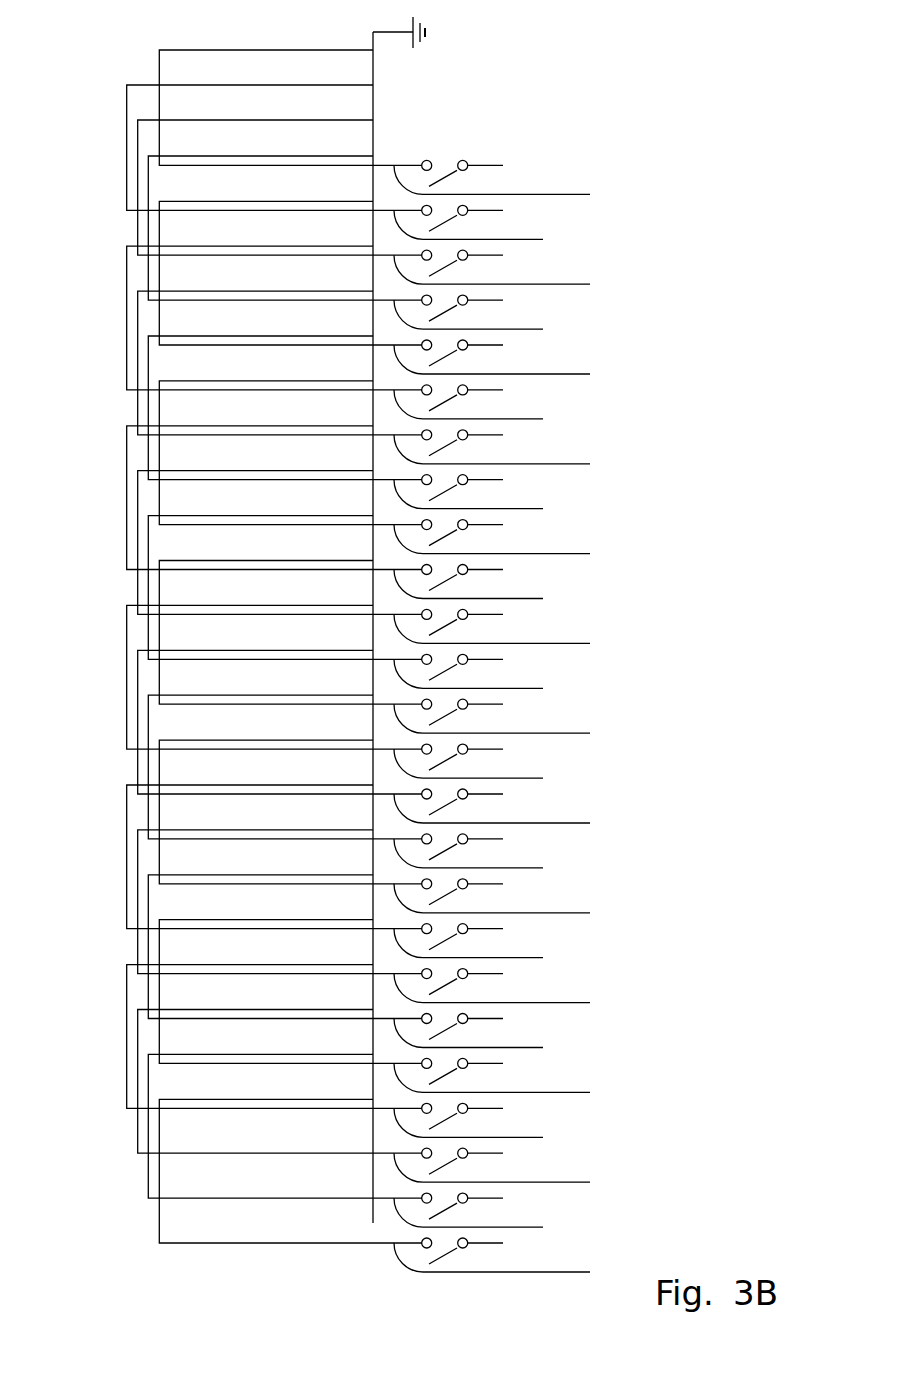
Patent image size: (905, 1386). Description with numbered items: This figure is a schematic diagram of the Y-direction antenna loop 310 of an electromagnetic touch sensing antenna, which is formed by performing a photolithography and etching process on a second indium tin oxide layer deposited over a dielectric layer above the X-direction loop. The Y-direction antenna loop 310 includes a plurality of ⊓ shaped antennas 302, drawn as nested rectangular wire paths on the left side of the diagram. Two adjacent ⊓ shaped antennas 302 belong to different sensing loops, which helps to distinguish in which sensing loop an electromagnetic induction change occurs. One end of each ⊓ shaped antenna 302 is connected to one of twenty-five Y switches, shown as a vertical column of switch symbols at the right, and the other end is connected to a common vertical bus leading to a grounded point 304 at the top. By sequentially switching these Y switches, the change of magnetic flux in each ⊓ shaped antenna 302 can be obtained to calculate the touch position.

The Y-direction antenna loop 310 is at (89, 43).
The grounded point 304 is at (393, 35).
The ⊓ shaped antenna 302 is at (146, 1178).